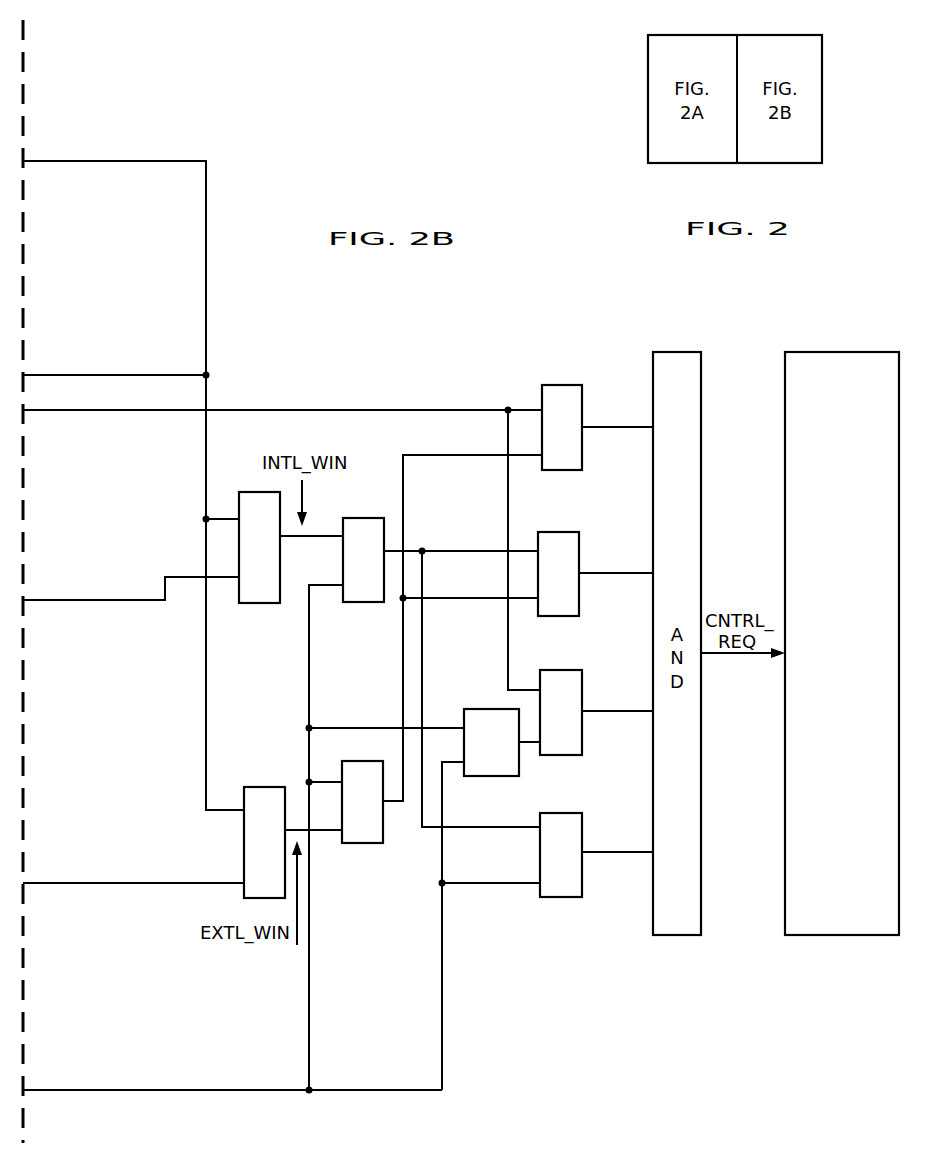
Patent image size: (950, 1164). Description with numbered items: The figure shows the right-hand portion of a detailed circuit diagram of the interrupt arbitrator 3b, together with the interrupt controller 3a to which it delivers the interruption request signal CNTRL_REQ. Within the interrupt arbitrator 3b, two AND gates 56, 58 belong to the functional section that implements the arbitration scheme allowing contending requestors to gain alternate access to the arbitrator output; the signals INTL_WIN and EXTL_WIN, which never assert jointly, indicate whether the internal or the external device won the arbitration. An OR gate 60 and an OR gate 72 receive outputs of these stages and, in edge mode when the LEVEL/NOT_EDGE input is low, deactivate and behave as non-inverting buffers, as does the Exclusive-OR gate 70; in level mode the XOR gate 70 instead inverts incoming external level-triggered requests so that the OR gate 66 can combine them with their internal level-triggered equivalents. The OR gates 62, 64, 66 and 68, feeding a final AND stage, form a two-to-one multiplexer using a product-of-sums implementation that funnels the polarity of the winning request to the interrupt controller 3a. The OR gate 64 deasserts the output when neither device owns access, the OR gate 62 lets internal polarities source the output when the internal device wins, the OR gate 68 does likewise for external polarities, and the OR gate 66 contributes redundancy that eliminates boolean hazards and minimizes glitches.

The interrupt controller 3a is at (856, 351).
The interrupt arbitrator 3b is at (232, 138).
The AND gate 56 is at (261, 786).
The AND gate 58 is at (250, 491).
The OR gate 60 is at (366, 509).
The OR gate 62 is at (569, 384).
The OR gate 64 is at (553, 531).
The OR gate 66 is at (554, 669).
The OR gate 68 is at (568, 812).
The Exclusive-OR gate 70 is at (480, 709).
The OR gate 72 is at (384, 841).